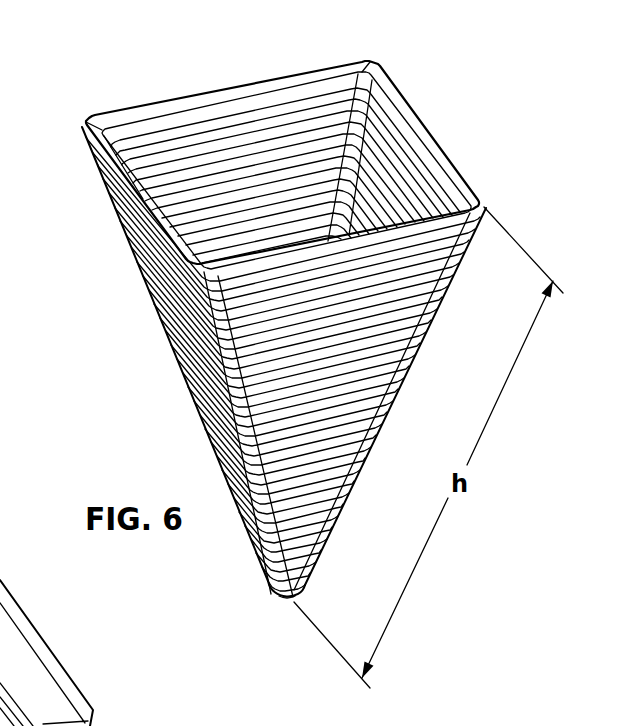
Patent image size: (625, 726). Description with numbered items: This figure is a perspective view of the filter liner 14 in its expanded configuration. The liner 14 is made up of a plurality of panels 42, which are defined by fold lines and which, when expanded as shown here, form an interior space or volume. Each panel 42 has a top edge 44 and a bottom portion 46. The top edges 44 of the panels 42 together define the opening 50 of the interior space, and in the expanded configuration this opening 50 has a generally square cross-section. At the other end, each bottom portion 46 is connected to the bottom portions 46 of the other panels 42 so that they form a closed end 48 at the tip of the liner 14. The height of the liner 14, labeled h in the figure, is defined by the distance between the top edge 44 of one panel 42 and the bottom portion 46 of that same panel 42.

The filter liner 14 is at (60, 175).
The panels 42 is at (307, 330).
The top edge 44 is at (143, 200).
The bottom portion 46 is at (298, 592).
The closed end 48 is at (281, 617).
The opening 50 is at (248, 157).